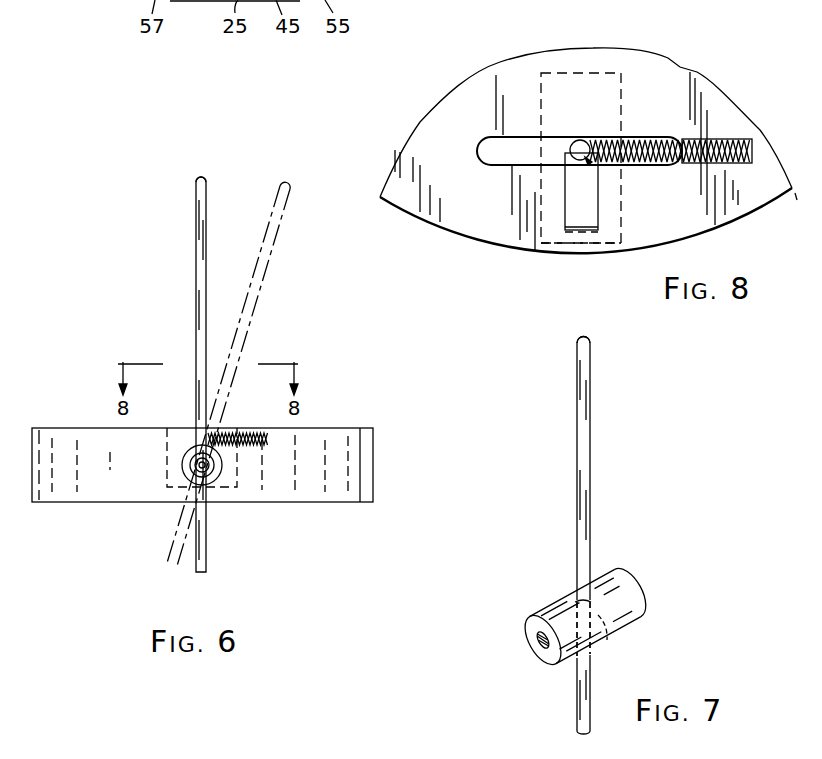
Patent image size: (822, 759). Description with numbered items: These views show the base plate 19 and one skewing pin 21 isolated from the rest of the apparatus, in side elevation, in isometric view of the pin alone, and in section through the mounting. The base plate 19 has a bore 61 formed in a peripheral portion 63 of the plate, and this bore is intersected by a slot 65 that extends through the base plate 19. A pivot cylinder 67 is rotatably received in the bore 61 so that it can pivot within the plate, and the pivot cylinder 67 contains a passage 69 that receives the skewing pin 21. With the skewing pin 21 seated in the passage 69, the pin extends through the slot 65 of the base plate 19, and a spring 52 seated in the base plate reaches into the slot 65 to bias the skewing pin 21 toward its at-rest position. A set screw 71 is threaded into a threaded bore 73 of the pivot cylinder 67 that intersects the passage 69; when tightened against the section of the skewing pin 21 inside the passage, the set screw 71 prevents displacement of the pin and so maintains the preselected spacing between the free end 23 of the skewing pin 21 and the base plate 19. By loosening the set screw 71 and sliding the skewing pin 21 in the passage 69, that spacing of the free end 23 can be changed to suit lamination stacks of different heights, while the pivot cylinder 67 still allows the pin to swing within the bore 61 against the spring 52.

In FIG. 6, the base plate 19 is at (70, 507).
In FIG. 8, the base plate 19 is at (488, 246).
In FIG. 6, the skewing pin 21 is at (197, 281).
In FIG. 8, the skewing pin 21 is at (586, 140).
In FIG. 7, the skewing pin 21 is at (578, 464).
In FIG. 6, the free end 23 is at (200, 175).
In FIG. 7, the free end 23 is at (578, 340).
In FIG. 6, the spring 52 is at (224, 433).
In FIG. 8, the spring 52 is at (643, 138).
In FIG. 6, the bore 61 is at (182, 465).
In FIG. 8, the bore 61 is at (624, 213).
In FIG. 6, the peripheral portion 63 is at (373, 472).
In FIG. 8, the peripheral portion 63 is at (738, 222).
In FIG. 6, the slot 65 is at (167, 482).
In FIG. 8, the slot 65 is at (500, 166).
In FIG. 6, the pivot cylinder 67 is at (213, 474).
In FIG. 8, the pivot cylinder 67 is at (540, 98).
In FIG. 7, the pivot cylinder 67 is at (630, 600).
In FIG. 6, the passage 69 is at (192, 450).
In FIG. 7, the passage 69 is at (608, 642).
In FIG. 6, the set screw 71 is at (207, 468).
In FIG. 8, the set screw 71 is at (580, 235).
In FIG. 7, the set screw 71 is at (535, 645).
In FIG. 8, the threaded bore 73 is at (560, 212).
In FIG. 7, the threaded bore 73 is at (560, 620).